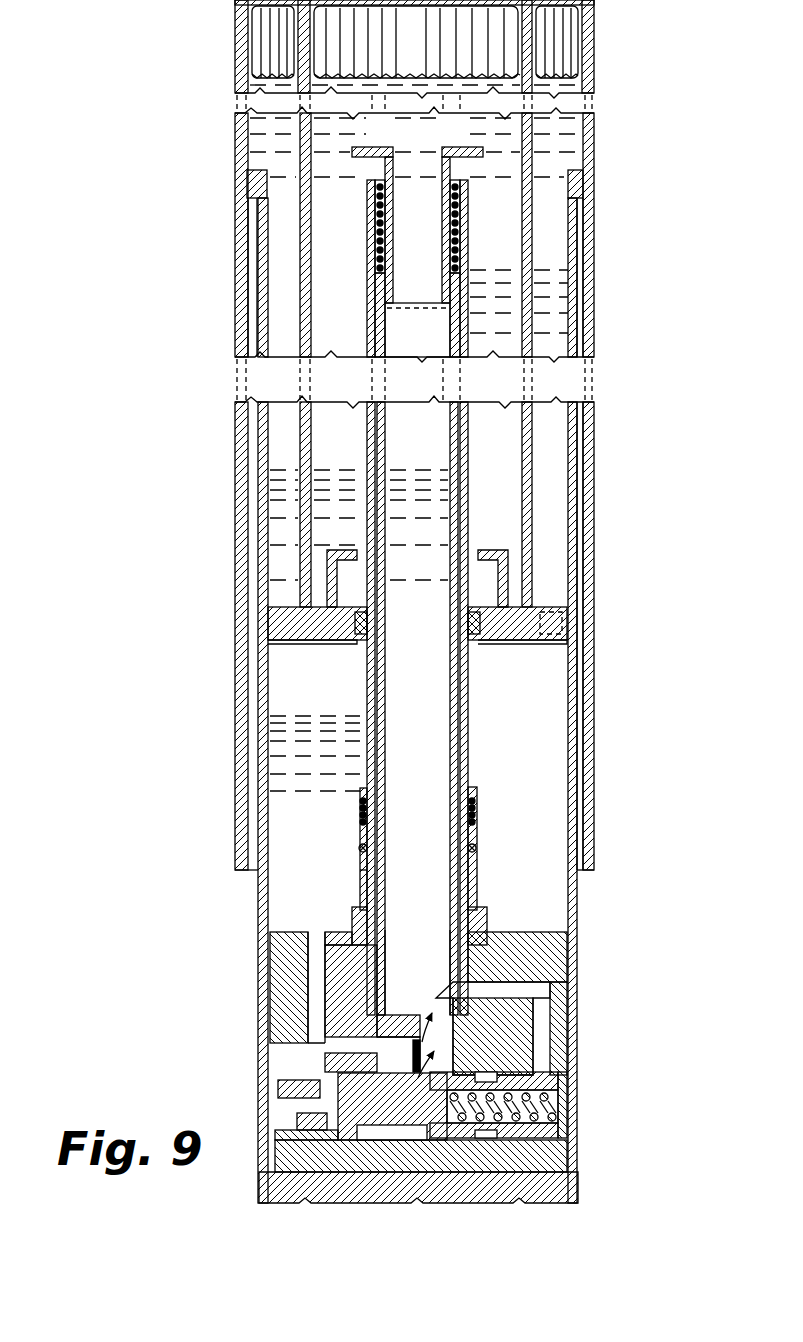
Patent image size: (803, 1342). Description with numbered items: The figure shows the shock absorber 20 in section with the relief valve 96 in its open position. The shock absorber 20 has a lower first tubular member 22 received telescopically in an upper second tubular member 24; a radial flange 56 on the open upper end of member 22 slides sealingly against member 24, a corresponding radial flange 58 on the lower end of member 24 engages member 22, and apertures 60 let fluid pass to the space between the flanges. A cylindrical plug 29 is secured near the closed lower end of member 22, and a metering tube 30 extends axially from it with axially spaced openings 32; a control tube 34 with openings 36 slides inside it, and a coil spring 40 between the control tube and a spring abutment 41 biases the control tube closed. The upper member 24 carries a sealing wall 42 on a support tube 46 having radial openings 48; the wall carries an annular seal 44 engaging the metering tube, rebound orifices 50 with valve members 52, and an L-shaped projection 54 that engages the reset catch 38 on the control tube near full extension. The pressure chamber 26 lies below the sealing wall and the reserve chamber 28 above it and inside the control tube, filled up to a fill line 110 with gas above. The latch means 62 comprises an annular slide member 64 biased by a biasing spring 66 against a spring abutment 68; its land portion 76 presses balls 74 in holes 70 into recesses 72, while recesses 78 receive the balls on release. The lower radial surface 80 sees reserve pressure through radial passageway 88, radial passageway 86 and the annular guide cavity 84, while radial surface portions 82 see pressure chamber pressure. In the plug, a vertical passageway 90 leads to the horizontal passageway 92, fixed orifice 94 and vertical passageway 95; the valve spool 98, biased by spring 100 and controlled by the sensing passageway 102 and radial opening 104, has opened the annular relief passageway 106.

The shock absorber 20 is at (196, 43).
The first tubular member 22 is at (270, 950).
The second tubular member 24 is at (237, 298).
The pressure chamber 26 is at (345, 711).
The reserve chamber 28 is at (433, 141).
The cylindrical plug 29 is at (560, 965).
The metering tube 30 is at (367, 338).
The openings 32 is at (369, 411).
The control tube 34 is at (451, 352).
The openings 36 is at (452, 432).
The reset catch 38 is at (470, 137).
The coil spring 40 is at (457, 200).
The spring abutment 41 is at (453, 172).
The sealing wall 42 is at (545, 642).
The annular seal 44 is at (470, 645).
The support tube 46 is at (536, 40).
The radial openings 48 is at (565, 62).
The rebound orifices 50 is at (545, 607).
The valve member 52 is at (268, 645).
The projection 54 is at (505, 550).
The radial flange 56 is at (252, 190).
The radial flange 58 is at (238, 858).
The apertures 60 is at (253, 203).
The latch means 62 is at (582, 838).
The slide member 64 is at (357, 870).
The biasing spring 66 is at (478, 812).
The spring abutment 68 is at (362, 803).
The holes 70 is at (386, 857).
The recess 72 is at (386, 872).
The ball 74 is at (360, 852).
The land portion 76 is at (480, 836).
The recesses 78 is at (480, 872).
The lower radial surface 80 is at (480, 958).
The radial surface portions 82 is at (360, 818).
The annular guide cavity 84 is at (362, 962).
The radial passageway 86 is at (385, 972).
The radial passageway 88 is at (387, 990).
The vertical passageway 90 is at (315, 935).
The horizontal passageway 92 is at (335, 1043).
The fixed orifice 94 is at (437, 1047).
The vertical passageway 95 is at (442, 1028).
The relief valve 96 is at (596, 1062).
The valve spool 98 is at (478, 1156).
The spring 100 is at (545, 1088).
The sensing passageway 102 is at (520, 987).
The radial opening 104 is at (455, 987).
The annular relief passageway 106 is at (285, 1108).
The fill line 110 is at (396, 80).